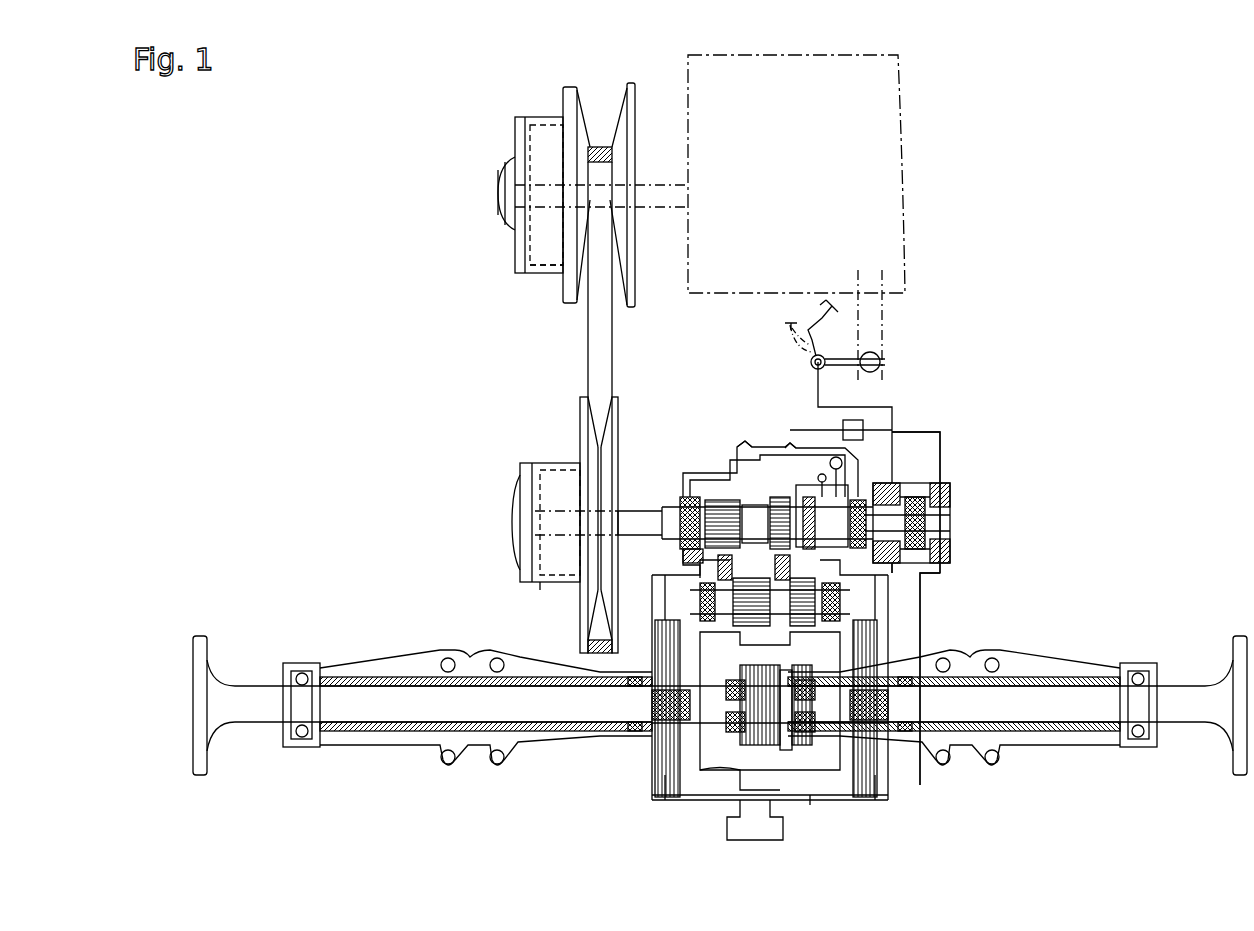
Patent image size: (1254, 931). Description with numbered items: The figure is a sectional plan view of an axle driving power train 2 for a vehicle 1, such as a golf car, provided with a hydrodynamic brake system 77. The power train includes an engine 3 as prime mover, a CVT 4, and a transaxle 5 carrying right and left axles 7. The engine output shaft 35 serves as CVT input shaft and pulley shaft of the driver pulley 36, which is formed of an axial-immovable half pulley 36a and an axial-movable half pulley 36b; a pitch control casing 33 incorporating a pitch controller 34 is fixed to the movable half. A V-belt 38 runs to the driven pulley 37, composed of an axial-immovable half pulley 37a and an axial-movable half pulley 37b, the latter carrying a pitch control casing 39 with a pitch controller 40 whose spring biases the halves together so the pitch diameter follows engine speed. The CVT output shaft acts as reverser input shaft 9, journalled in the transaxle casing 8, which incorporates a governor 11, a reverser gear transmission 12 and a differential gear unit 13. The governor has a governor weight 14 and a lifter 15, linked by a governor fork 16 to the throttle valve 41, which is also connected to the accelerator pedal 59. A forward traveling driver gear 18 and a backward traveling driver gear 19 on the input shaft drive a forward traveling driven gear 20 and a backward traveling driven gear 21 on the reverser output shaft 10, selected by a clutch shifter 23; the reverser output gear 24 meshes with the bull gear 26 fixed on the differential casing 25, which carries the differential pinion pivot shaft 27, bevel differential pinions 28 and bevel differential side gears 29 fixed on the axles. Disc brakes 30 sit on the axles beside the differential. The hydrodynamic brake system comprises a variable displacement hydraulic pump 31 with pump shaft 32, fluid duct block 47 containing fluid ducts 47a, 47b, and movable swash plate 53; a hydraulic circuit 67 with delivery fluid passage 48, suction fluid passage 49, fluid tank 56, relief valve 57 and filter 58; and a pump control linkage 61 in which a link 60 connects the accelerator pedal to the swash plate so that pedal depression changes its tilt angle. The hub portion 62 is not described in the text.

The vehicle 1 is at (1165, 158).
The axle driving power train 2 is at (1035, 180).
The engine 3 is at (905, 160).
The CVT 4 is at (548, 181).
The transaxle 5 is at (720, 604).
The axles 7 is at (866, 470).
The transaxle casing 8 is at (710, 476).
The reverser input shaft 9 is at (640, 509).
The reverser output shaft 10 is at (700, 600).
The governor 11 is at (790, 446).
The reverser gear transmission 12 is at (748, 444).
The differential gear unit 13 is at (725, 800).
The governor weight 14 is at (822, 501).
The lifter 15 is at (777, 510).
The governor fork 16 is at (860, 498).
The forward traveling driver gear 18 is at (754, 508).
The backward traveling driver gear 19 is at (725, 512).
The forward traveling driven gear 20 is at (780, 652).
The backward traveling driven gear 21 is at (690, 560).
The clutch shifter 23 is at (758, 566).
The reverser output gear 24 is at (835, 572).
The differential casing 25 is at (774, 726).
The bull gear 26 is at (830, 820).
The differential pinion pivot shaft 27 is at (735, 690).
The bevel differential pinions 28 is at (777, 725).
The bevel differential side gears 29 is at (740, 745).
The disc brakes 30 is at (640, 755).
The variable displacement hydraulic pump 31 is at (953, 500).
The pump shaft 32 is at (950, 528).
The pitch control casing 33 is at (530, 118).
The pitch controller 34 is at (540, 275).
The engine output shaft 35 is at (665, 185).
The driver pulley 36 is at (598, 179).
The axial-immovable half pulley 36a is at (637, 112).
The axial-movable half pulley 36b is at (568, 90).
The driven pulley 37 is at (600, 500).
The axial-immovable half pulley 37a is at (620, 416).
The axial-movable half pulley 37b is at (583, 405).
The V-belt 38 is at (582, 336).
The pitch control casing 39 is at (540, 462).
The pitch controller 40 is at (541, 590).
The throttle valve 41 is at (880, 352).
The fluid duct block 47 is at (940, 522).
The fluid duct 47a is at (952, 512).
The fluid duct 47b is at (955, 547).
The delivery fluid passage 48 is at (940, 440).
The suction fluid passage 49 is at (927, 627).
The movable swash plate 53 is at (908, 495).
The fluid tank 56 is at (740, 788).
The relief valve 57 is at (843, 430).
The filter 58 is at (785, 812).
The accelerator pedal 59 is at (804, 324).
The link 60 is at (811, 373).
The pump control linkage 61 is at (910, 396).
The drive pulley hub 62 is at (603, 102).
The hydraulic circuit 67 is at (972, 457).
The hydrodynamic brake system 77 is at (1025, 377).